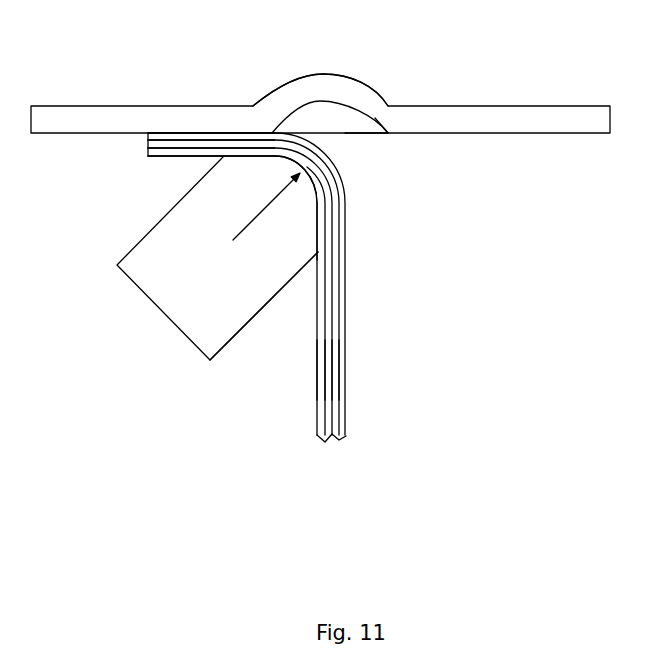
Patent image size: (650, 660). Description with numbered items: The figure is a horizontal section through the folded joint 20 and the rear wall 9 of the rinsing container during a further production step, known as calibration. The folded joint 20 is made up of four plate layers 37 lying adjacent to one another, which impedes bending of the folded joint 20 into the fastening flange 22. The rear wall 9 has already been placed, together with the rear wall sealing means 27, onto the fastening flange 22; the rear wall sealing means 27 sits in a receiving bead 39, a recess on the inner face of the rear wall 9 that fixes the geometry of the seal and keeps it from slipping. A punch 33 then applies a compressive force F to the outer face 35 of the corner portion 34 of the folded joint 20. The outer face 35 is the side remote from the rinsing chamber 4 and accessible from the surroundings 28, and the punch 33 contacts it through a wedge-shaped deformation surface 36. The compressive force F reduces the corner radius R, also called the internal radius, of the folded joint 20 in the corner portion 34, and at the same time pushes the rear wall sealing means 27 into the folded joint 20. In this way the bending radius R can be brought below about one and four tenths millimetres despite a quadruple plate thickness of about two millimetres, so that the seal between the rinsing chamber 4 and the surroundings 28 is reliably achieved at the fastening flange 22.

The rear wall 9 is at (458, 105).
The receiving bead 39 is at (336, 141).
The rear wall sealing means 27 is at (331, 116).
The corner radius R is at (388, 130).
The folded joint 20 is at (356, 291).
The fastening flange 22 is at (185, 140).
The outer face 35 is at (238, 158).
The deformation surface 36 is at (325, 207).
The plate layers 37 is at (320, 390).
The corner portion 34 is at (365, 161).
The surroundings 28 is at (117, 372).
The punch 33 is at (236, 334).
The compressive force F is at (236, 238).
The rinsing chamber 4 is at (473, 276).